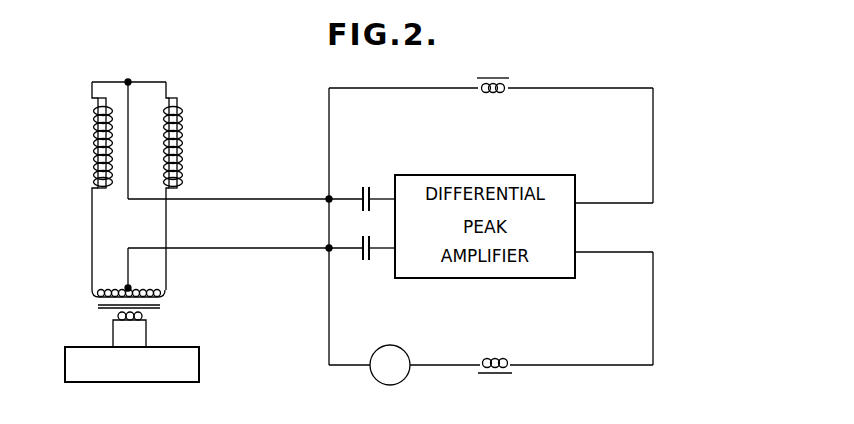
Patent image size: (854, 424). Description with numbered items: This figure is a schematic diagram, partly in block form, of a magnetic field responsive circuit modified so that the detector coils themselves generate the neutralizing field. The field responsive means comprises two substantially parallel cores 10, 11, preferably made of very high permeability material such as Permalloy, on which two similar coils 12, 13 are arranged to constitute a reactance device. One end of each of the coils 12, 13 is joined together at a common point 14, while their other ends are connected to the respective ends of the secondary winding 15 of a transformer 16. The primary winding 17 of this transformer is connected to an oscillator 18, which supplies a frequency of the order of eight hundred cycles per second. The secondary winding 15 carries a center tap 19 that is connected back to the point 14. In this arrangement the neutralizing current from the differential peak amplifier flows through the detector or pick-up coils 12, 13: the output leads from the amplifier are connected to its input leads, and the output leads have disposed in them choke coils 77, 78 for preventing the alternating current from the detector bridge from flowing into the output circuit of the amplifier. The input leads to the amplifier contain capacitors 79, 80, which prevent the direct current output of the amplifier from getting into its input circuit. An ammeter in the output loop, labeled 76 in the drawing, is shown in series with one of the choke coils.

The core 10 is at (175, 100).
The core 11 is at (100, 100).
The coil 12 is at (183, 169).
The coil 13 is at (93, 160).
The point 14 is at (128, 80).
The secondary winding 15 is at (100, 290).
The transformer 16 is at (90, 309).
The primary winding 17 is at (136, 318).
The oscillator 18 is at (158, 383).
The center tap 19 is at (128, 285).
The ammeter 76 is at (400, 383).
The choke coil 77 is at (492, 93).
The choke coil 78 is at (498, 359).
The capacitor 79 is at (360, 194).
The capacitor 80 is at (360, 256).